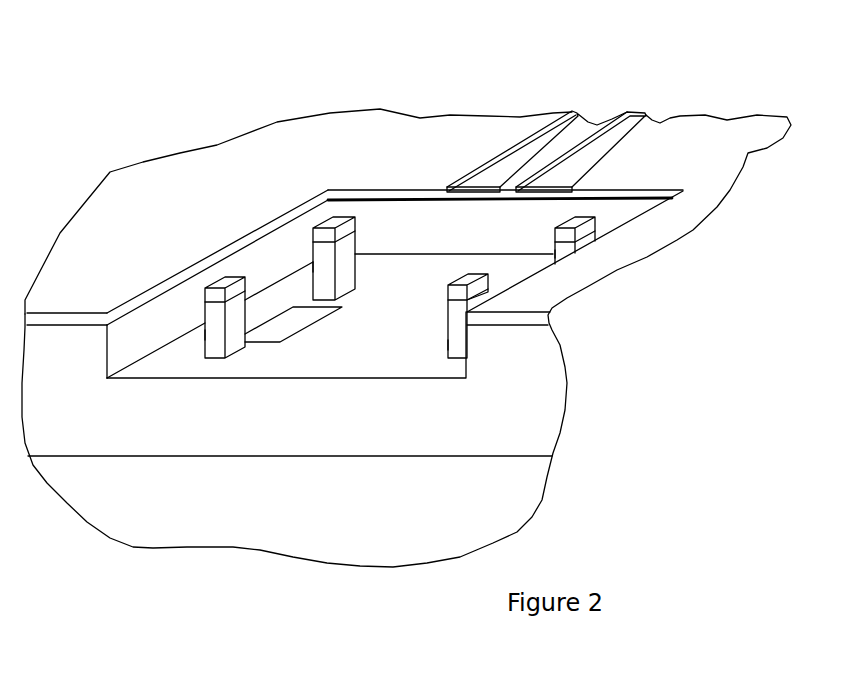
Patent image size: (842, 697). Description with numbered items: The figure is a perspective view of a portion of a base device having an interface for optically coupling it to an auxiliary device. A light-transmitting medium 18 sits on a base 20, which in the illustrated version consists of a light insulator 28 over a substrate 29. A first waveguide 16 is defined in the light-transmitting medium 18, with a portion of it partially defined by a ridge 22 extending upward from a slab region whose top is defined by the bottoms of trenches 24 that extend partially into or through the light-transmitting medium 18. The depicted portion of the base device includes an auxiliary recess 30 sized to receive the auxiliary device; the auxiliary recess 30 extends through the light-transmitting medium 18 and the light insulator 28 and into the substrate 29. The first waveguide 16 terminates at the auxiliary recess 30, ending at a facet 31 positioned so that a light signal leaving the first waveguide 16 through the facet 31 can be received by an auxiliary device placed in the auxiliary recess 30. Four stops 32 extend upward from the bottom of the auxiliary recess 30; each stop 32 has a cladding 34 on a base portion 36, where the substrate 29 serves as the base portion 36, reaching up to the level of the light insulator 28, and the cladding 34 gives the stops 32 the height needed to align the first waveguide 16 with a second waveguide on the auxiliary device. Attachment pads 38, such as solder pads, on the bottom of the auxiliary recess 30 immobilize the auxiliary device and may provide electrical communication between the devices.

The first waveguide 16 is at (603, 112).
The light-transmitting medium 18 is at (62, 322).
The base 20 is at (342, 351).
The ridge 22 is at (638, 110).
The trenches 24 is at (500, 177).
The light insulator 28 is at (133, 312).
The substrate 29 is at (200, 422).
The auxiliary recess 30 is at (383, 224).
The facet 31 is at (507, 198).
The stops 32 is at (200, 308).
The cladding 34 is at (328, 218).
The base portion 36 is at (218, 342).
The attachment pads 38 is at (293, 323).